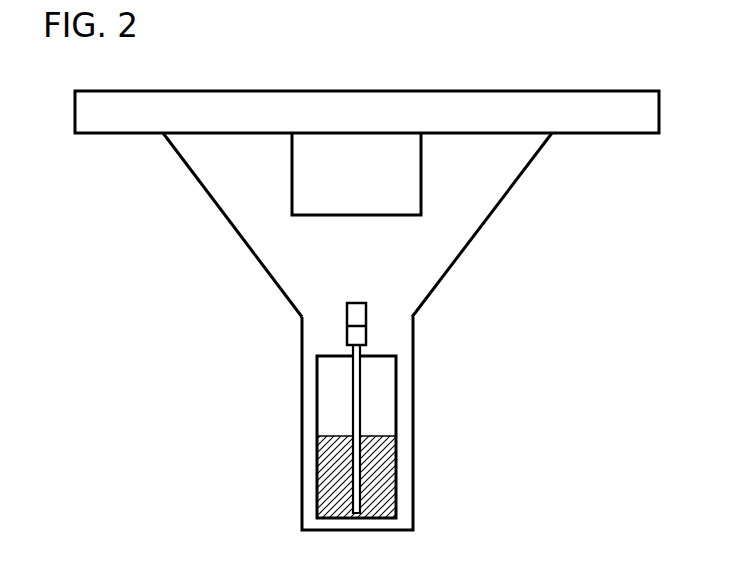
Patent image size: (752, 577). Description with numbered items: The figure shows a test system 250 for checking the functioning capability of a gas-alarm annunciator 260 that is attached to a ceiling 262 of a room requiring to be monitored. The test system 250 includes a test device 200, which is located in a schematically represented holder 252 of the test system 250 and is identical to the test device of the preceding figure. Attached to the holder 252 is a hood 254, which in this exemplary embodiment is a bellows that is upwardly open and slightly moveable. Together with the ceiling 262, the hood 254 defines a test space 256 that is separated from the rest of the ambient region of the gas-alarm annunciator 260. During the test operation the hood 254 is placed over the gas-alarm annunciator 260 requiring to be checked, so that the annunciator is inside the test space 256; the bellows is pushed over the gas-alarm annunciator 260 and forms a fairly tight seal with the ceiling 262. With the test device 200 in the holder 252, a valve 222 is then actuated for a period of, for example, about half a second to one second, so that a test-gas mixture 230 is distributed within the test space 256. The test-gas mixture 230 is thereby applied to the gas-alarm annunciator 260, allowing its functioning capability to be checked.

The test device 200 is at (378, 333).
The valve 222 is at (345, 338).
The test-gas mixture 230 is at (353, 294).
The test system 250 is at (152, 365).
The holder 252 is at (414, 436).
The hood 254 is at (500, 200).
The test space 256 is at (222, 195).
The gas-alarm annunciator 260 is at (413, 163).
The ceiling 262 is at (574, 105).